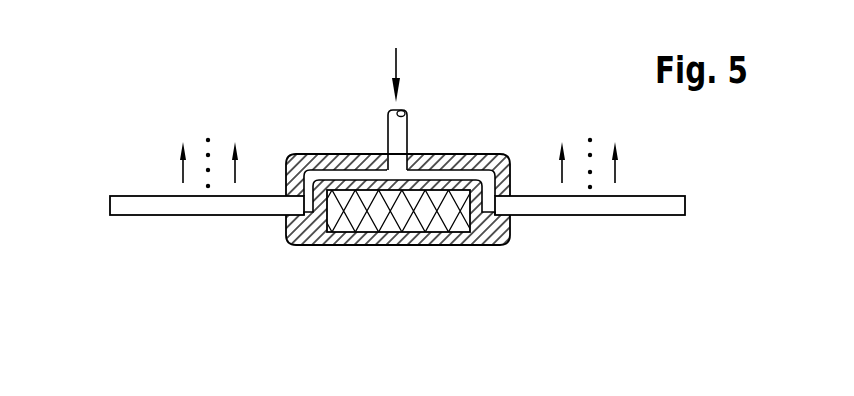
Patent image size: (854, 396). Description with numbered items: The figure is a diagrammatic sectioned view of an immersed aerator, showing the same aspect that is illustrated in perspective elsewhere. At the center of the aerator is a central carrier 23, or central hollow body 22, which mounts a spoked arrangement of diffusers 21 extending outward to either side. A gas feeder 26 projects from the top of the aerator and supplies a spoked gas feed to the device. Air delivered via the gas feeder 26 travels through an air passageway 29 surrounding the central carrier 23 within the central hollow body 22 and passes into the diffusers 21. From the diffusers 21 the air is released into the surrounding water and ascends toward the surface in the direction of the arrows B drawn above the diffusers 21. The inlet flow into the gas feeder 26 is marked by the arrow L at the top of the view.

The diffusers 21 is at (155, 208).
The central hollow body 22 is at (312, 226).
The central carrier 23 is at (478, 238).
The gas feeder 26 is at (397, 132).
The air passageway 29 is at (449, 172).
The arrows B is at (183, 170).
The air flow L is at (396, 62).